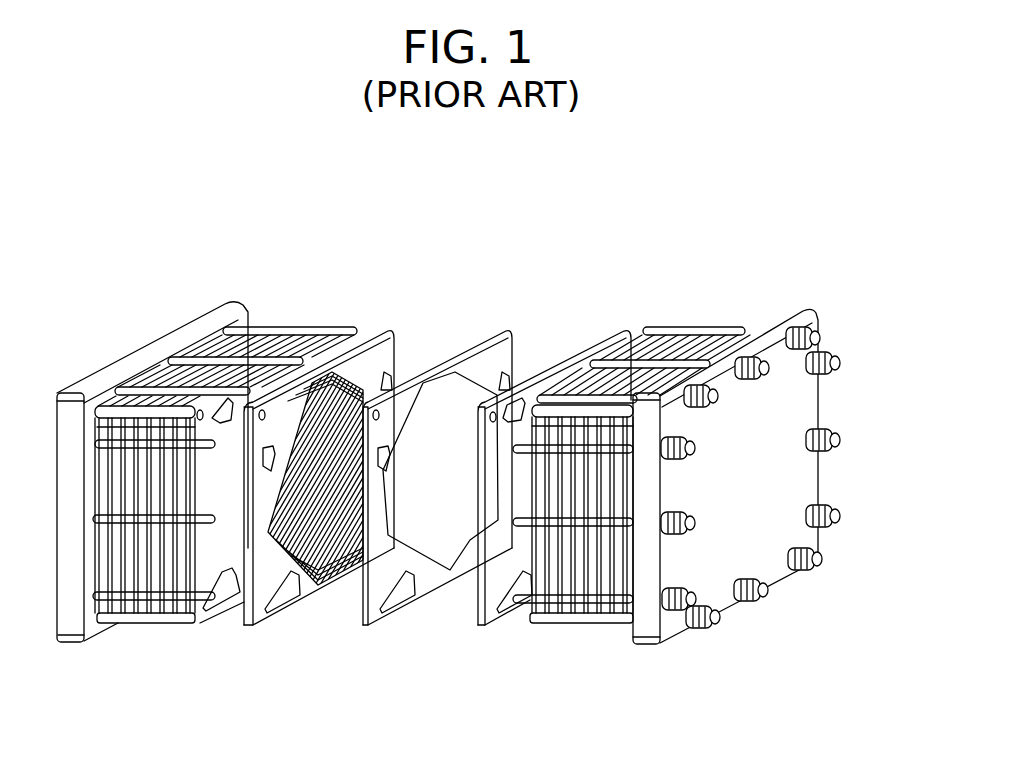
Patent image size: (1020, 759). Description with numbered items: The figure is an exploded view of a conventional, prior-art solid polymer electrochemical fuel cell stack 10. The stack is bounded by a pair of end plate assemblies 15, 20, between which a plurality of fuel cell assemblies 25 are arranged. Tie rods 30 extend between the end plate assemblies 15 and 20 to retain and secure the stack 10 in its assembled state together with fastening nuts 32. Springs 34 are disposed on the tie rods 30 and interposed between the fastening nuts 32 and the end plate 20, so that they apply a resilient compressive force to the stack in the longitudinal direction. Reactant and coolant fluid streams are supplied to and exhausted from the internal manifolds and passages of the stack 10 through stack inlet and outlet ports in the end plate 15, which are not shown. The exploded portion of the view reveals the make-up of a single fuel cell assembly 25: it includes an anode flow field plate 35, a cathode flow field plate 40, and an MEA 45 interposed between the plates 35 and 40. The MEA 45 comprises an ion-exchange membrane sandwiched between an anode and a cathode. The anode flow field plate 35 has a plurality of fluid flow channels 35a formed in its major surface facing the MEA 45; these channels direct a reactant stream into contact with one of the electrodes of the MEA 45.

The solid polymer electrochemical fuel cell stack 10 is at (252, 230).
The end plate assembly 15 is at (110, 372).
The end plate assembly 20 is at (800, 308).
The fuel cell assembly 25 is at (143, 627).
The tie rod 30 is at (300, 328).
The fastening nut 32 is at (840, 360).
The spring 34 is at (760, 600).
The anode flow field plate 35 is at (387, 327).
The fluid flow channel 35a is at (327, 583).
The cathode flow field plate 40 is at (618, 330).
The MEA 45 is at (505, 328).